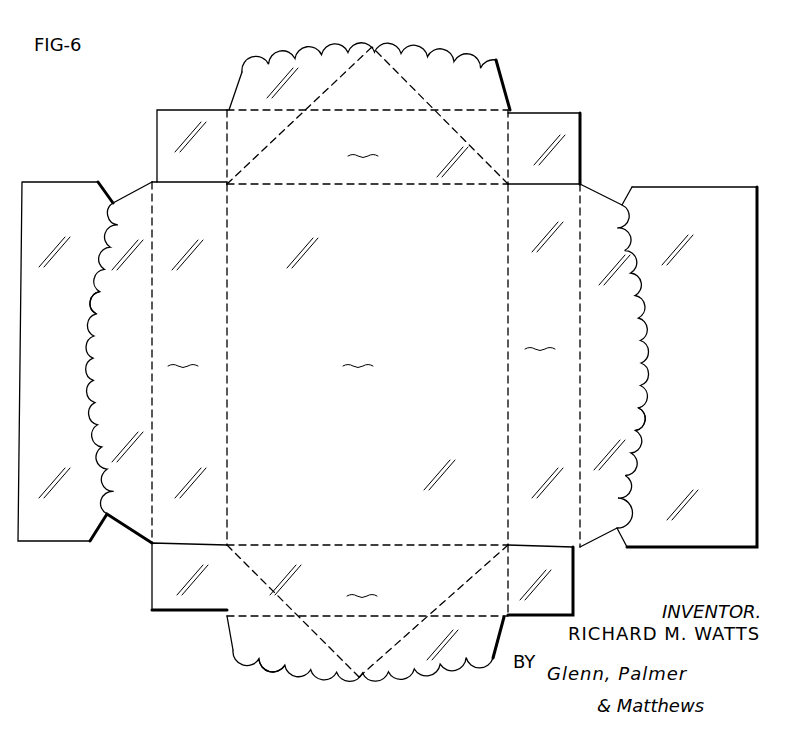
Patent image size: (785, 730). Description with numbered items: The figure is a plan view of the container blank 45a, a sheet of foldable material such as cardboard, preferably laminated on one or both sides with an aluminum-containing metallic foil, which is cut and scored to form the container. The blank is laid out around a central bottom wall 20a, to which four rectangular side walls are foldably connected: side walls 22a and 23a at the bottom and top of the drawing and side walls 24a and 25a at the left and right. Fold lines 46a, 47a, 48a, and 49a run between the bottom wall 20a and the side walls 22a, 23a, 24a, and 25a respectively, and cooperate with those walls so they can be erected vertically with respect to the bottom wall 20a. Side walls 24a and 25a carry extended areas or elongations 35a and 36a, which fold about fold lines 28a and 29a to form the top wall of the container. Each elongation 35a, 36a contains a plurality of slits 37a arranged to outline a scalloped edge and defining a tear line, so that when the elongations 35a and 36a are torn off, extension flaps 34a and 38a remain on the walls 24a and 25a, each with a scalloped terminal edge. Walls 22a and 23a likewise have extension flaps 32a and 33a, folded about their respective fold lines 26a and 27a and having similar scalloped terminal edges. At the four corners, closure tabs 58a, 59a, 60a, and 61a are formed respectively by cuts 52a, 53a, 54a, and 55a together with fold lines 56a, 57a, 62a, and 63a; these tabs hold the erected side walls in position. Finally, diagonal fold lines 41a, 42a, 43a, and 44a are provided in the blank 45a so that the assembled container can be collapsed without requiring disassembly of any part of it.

The bottom wall 20a is at (371, 364).
The side wall 22a is at (367, 590).
The side wall 23a is at (367, 143).
The side wall 24a is at (179, 362).
The side wall 25a is at (552, 365).
The fold line 26a is at (243, 620).
The fold line 27a is at (488, 108).
The fold line 28a is at (152, 207).
The fold line 29a is at (583, 203).
The extension flap 32a is at (273, 665).
The extension flap 33a is at (445, 60).
The extension flap 34a is at (89, 323).
The elongation 35a is at (55, 188).
The elongation 36a is at (707, 195).
The slits 37a is at (650, 377).
The extension flap 38a is at (641, 329).
The fold line 41a is at (404, 672).
The fold line 42a is at (326, 650).
The fold line 43a is at (398, 68).
The fold line 44a is at (338, 70).
The container blank 45a is at (624, 69).
The fold line 46a is at (399, 546).
The fold line 47a is at (380, 184).
The fold line 48a is at (228, 330).
The fold line 49a is at (507, 332).
The cut 52a is at (165, 543).
The cut 53a is at (575, 553).
The cut 54a is at (172, 181).
The cut 55a is at (560, 185).
The fold line 56a is at (224, 595).
The fold line 57a is at (506, 598).
The closure tab 58a is at (161, 607).
The closure tab 59a is at (566, 593).
The closure tab 60a is at (176, 118).
The closure tab 61a is at (578, 120).
The fold line 62a is at (228, 130).
The fold line 63a is at (513, 130).